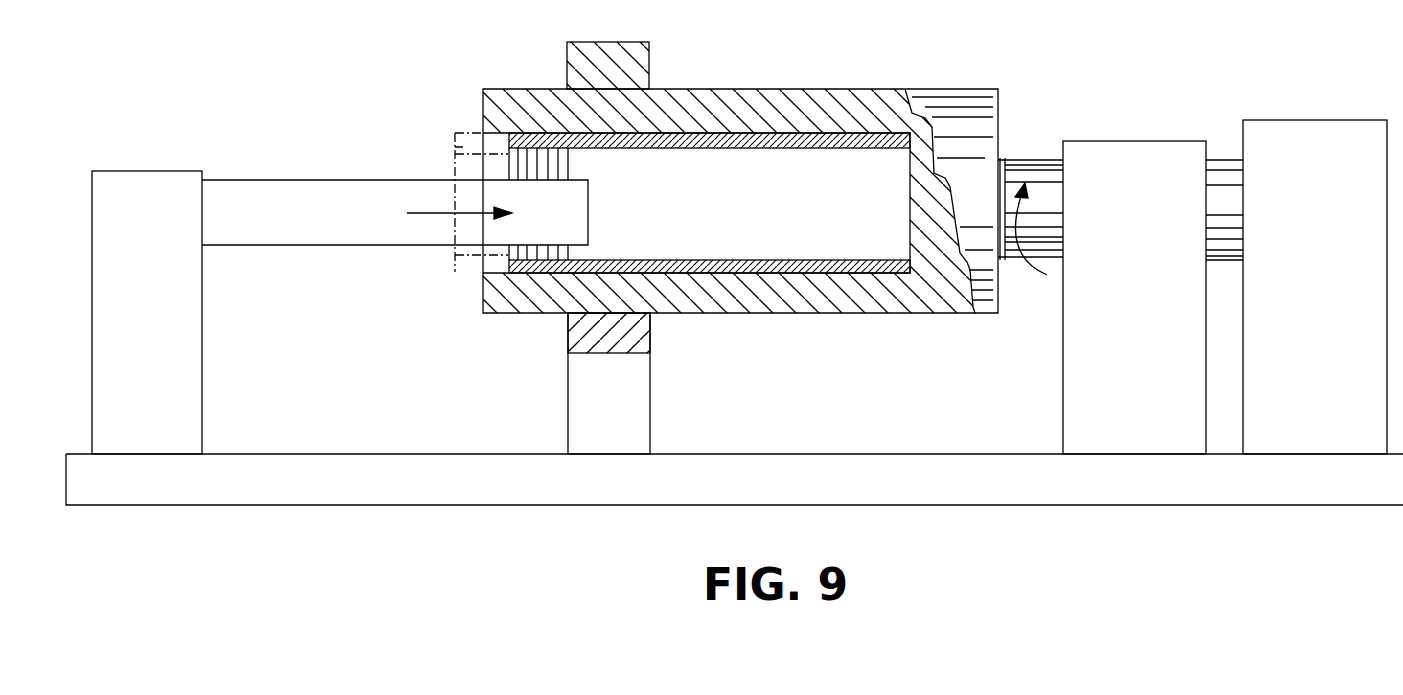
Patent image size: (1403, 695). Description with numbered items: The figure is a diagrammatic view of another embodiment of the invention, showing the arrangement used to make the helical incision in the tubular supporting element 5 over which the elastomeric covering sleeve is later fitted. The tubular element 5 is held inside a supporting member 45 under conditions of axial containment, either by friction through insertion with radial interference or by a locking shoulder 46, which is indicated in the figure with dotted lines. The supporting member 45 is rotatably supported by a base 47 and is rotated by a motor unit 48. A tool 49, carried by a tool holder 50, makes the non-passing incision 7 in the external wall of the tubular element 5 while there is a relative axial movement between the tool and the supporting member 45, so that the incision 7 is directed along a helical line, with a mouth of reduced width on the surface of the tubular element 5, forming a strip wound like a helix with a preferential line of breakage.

The tubular supporting element 5 is at (768, 152).
The non-passing incision 7 is at (580, 148).
The supporting member 45 is at (782, 297).
The locking shoulder 46 is at (455, 140).
The base 47 is at (1103, 385).
The motor unit 48 is at (1303, 145).
The tool 49 is at (568, 253).
The tool holder 50 is at (345, 197).